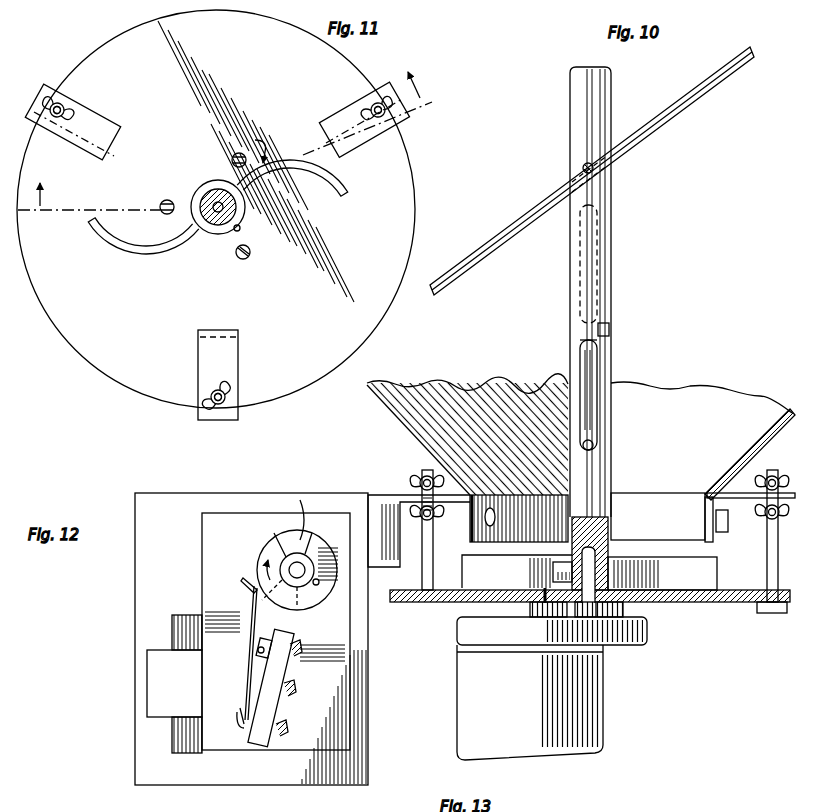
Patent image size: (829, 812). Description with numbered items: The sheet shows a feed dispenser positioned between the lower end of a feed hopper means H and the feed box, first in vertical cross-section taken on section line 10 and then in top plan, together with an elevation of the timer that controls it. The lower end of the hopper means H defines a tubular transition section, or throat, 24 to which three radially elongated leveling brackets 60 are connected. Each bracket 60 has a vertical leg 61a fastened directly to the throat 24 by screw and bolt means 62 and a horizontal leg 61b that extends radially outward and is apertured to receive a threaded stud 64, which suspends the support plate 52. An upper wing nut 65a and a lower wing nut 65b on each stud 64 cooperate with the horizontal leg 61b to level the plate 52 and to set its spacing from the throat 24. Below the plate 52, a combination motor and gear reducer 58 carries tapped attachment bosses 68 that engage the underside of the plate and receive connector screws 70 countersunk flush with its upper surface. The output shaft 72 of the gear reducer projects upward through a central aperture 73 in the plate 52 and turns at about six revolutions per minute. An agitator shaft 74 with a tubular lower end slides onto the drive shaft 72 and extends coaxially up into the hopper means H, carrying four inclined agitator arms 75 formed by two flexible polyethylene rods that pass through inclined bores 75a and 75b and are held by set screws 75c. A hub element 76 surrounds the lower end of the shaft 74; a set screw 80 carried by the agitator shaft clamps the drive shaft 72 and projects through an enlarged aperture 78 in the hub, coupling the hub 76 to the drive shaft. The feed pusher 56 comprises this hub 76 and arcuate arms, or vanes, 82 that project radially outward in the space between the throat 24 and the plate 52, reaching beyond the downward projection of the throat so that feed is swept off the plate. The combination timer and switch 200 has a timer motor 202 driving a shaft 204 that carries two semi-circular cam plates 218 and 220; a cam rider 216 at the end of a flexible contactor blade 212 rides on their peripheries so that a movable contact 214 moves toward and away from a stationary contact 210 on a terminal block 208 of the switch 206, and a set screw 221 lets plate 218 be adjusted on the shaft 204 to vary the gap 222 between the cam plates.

In FIG. 11, the section line 10 is at (232, 160).
In FIG. 10, the tubular transition section 24 is at (632, 507).
In FIG. 11, the support plate 52 is at (402, 207).
In FIG. 10, the support plate 52 is at (684, 604).
In FIG. 11, the feed pusher 56 is at (255, 143).
In FIG. 10, the feed pusher 56 is at (677, 573).
In FIG. 10, the combination motor and gear reducer 58 is at (607, 693).
In FIG. 11, the leveling bracket 60 is at (239, 257).
In FIG. 10, the leveling bracket 60 is at (562, 511).
In FIG. 11, the vertical leg 61a is at (112, 134).
In FIG. 10, the vertical leg 61a is at (715, 542).
In FIG. 11, the horizontal leg 61b is at (78, 138).
In FIG. 10, the horizontal leg 61b is at (370, 495).
In FIG. 10, the screw and bolt means 62 is at (728, 532).
In FIG. 11, the threaded stud 64 is at (52, 105).
In FIG. 10, the threaded stud 64 is at (422, 585).
In FIG. 11, the upper wing nut 65a is at (66, 100).
In FIG. 10, the upper wing nut 65a is at (423, 476).
In FIG. 10, the lower wing nut 65b is at (436, 514).
In FIG. 10, the tapped attachment boss 68 is at (536, 612).
In FIG. 11, the connector screw 70 is at (233, 160).
In FIG. 10, the connector screw 70 is at (541, 592).
In FIG. 11, the output shaft 72 is at (215, 226).
In FIG. 10, the output shaft 72 is at (596, 560).
In FIG. 10, the central aperture 73 is at (610, 592).
In FIG. 10, the agitator shaft 74 is at (612, 243).
In FIG. 10, the agitator arm 75 is at (688, 140).
In FIG. 10, the inclined bore 75a is at (583, 338).
In FIG. 10, the inclined bore 75b is at (582, 164).
In FIG. 10, the set screw 75c is at (594, 169).
In FIG. 11, the hub element 76 is at (246, 211).
In FIG. 10, the hub element 76 is at (616, 570).
In FIG. 10, the enlarged aperture 78 is at (566, 560).
In FIG. 11, the set screw 80 is at (241, 230).
In FIG. 10, the set screw 80 is at (553, 566).
In FIG. 11, the arcuate arm 82 is at (340, 183).
In FIG. 10, the arcuate arm 82 is at (468, 565).
In FIG. 10, the feed hopper means H is at (714, 410).
In FIG. 12, the combination timer and switch 200 is at (133, 703).
In FIG. 12, the timer motor 202 is at (176, 630).
In FIG. 12, the shaft 204 is at (288, 546).
In FIG. 12, the switch 206 is at (292, 674).
In FIG. 12, the terminal block 208 is at (272, 706).
In FIG. 12, the stationary contact 210 is at (270, 636).
In FIG. 12, the contactor blade 212 is at (250, 690).
In FIG. 12, the movable contact 214 is at (258, 646).
In FIG. 12, the cam rider 216 is at (252, 588).
In FIG. 12, the cam plate 218 is at (318, 546).
In FIG. 12, the cam plate 220 is at (265, 546).
In FIG. 12, the set screw 221 is at (314, 598).
In FIG. 12, the gap 222 is at (304, 510).